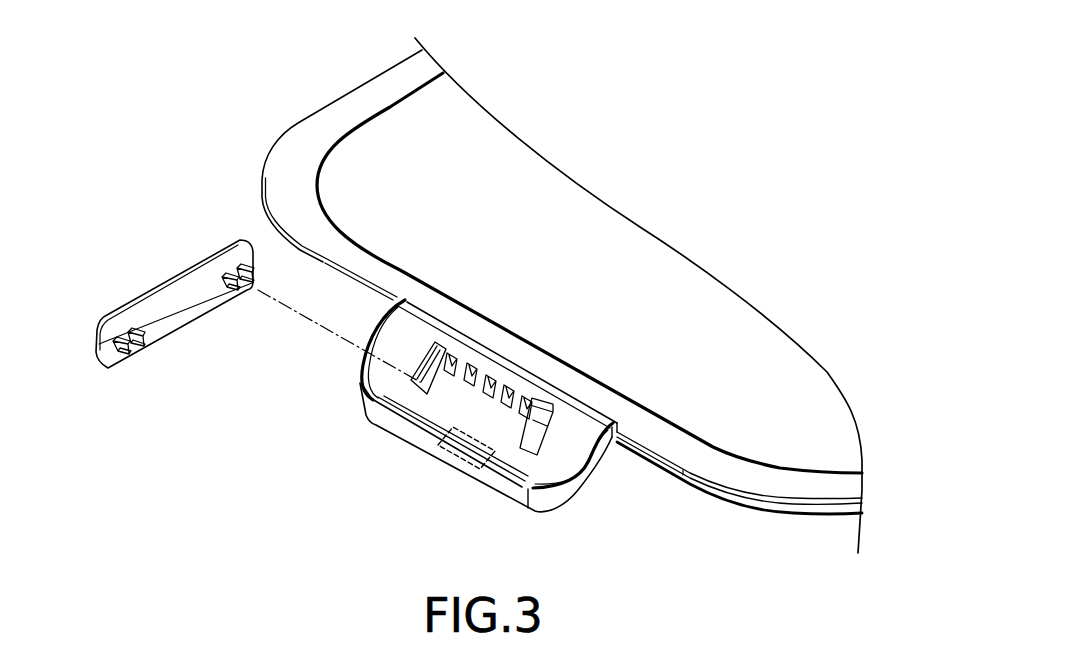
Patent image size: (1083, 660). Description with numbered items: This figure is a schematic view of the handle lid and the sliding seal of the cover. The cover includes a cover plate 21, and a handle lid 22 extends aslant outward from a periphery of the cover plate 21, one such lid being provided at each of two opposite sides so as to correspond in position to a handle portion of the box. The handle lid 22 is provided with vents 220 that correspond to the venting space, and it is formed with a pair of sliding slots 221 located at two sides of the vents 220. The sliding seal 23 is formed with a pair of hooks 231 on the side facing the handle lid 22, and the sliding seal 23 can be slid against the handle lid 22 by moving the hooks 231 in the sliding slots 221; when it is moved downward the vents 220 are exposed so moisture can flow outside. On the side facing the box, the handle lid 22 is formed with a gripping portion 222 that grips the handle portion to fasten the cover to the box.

The cover plate 21 is at (284, 124).
The handle lid 22 is at (563, 492).
The vents 220 is at (468, 373).
The sliding slots 221 is at (425, 383).
The gripping portion 222 is at (443, 463).
The sliding seal 23 is at (168, 285).
The hooks 231 is at (235, 291).